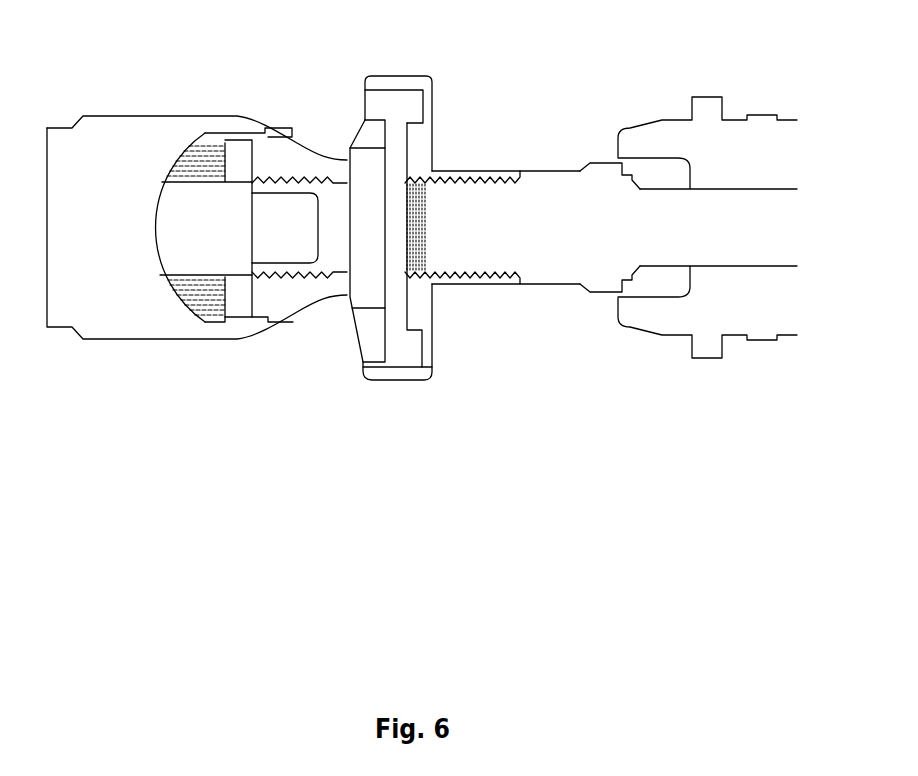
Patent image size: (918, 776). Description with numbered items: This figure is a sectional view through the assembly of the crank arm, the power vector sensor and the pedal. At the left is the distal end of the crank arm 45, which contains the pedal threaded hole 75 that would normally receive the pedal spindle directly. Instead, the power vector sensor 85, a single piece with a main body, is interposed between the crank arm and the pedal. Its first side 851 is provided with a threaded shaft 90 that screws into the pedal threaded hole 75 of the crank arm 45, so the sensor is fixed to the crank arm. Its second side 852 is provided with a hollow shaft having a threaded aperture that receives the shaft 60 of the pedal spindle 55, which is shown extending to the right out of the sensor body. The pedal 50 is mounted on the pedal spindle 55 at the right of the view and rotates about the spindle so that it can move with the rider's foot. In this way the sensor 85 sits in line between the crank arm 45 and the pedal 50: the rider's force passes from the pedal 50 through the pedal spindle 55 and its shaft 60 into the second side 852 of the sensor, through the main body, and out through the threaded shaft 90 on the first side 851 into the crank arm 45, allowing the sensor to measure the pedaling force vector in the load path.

The crank arm 45 is at (208, 120).
The pedal threaded hole 75 is at (239, 220).
The threaded shaft 90 is at (298, 182).
The power vector sensor 85 is at (390, 206).
The first side 851 is at (387, 322).
The second side 852 is at (408, 310).
The shaft 60 is at (502, 182).
The pedal spindle 55 is at (606, 175).
The pedal 50 is at (730, 140).